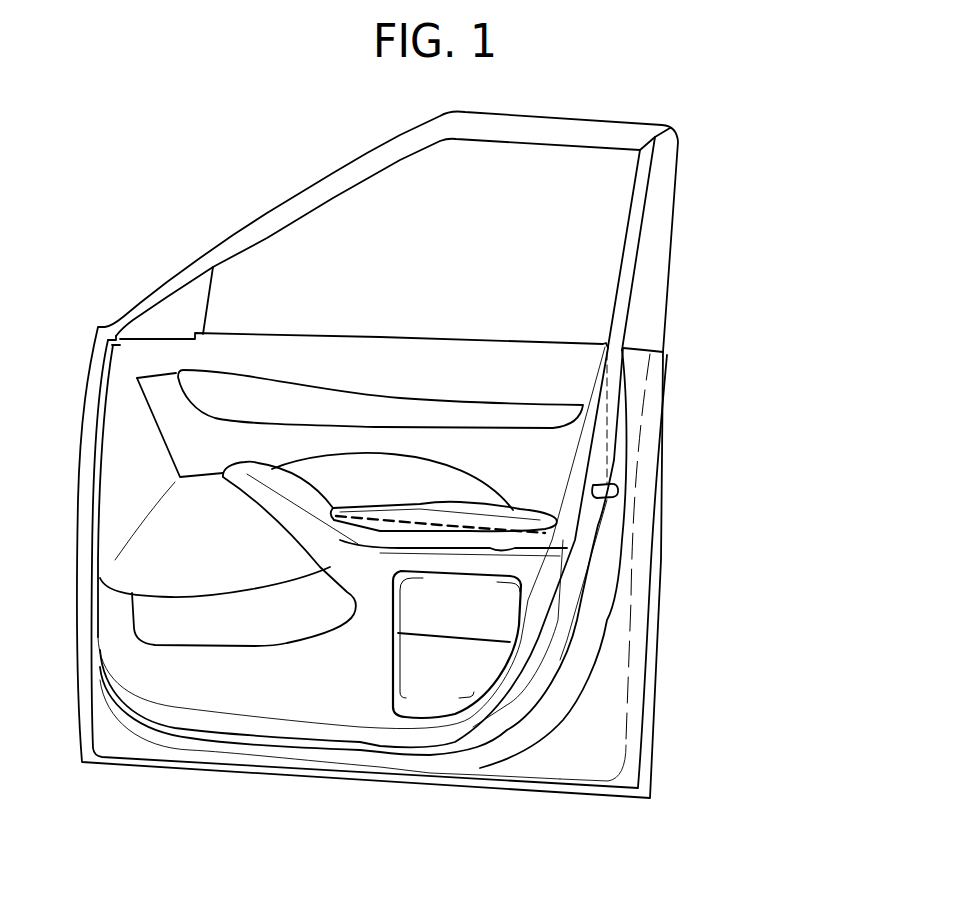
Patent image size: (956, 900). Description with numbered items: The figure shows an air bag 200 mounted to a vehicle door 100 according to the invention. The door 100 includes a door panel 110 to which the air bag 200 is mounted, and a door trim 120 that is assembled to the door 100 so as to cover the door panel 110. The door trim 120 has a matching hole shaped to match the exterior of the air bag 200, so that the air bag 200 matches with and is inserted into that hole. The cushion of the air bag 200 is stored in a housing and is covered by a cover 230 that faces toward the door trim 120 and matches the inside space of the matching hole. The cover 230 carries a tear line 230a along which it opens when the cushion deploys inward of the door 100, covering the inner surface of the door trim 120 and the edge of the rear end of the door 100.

The door 100 is at (156, 241).
The door panel 110 is at (592, 593).
The door trim 120 is at (303, 687).
The air bag 200 is at (514, 676).
The cover 230 is at (427, 680).
The tear line 230a is at (470, 643).